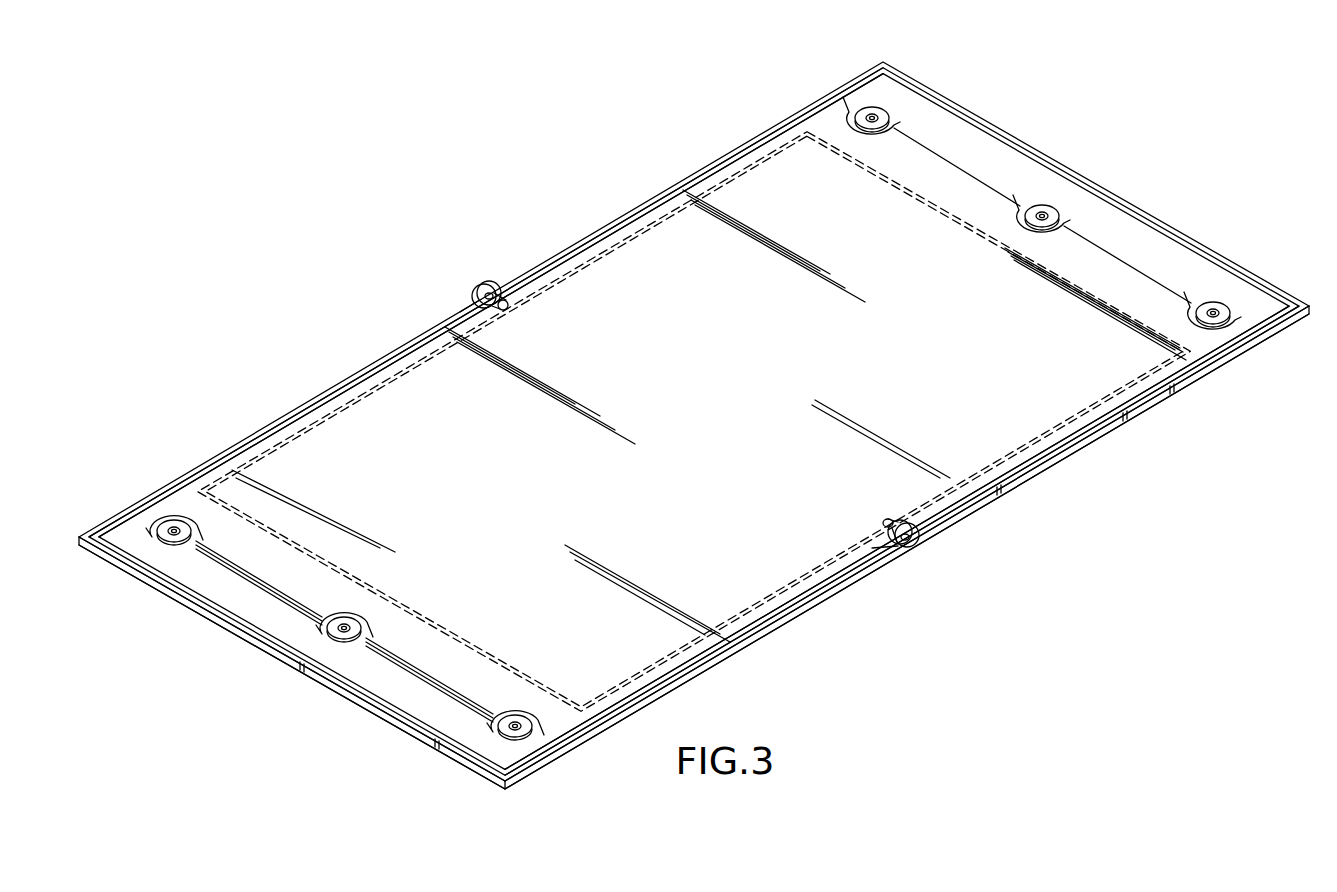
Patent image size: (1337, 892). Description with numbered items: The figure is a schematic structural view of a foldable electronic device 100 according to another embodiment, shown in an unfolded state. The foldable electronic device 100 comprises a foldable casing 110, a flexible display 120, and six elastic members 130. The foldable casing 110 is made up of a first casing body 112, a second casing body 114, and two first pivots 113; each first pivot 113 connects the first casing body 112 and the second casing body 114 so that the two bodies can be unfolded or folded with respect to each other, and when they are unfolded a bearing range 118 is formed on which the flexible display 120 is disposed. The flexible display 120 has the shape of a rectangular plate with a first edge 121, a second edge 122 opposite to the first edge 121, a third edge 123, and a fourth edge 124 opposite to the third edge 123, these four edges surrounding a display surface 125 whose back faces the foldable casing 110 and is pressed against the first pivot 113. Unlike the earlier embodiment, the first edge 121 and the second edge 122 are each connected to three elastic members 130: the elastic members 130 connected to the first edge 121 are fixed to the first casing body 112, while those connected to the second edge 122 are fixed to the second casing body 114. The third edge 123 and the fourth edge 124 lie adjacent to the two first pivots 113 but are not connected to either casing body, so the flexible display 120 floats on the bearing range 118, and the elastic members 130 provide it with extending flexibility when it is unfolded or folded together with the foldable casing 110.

The foldable electronic device 100 is at (1122, 677).
The foldable casing 110 is at (1178, 466).
The first casing body 112 is at (1105, 430).
The first pivot 113 is at (485, 282).
The second casing body 114 is at (760, 635).
The bearing range 118 is at (955, 130).
The flexible display 120 is at (440, 367).
The first edge 121 is at (1168, 278).
The second edge 122 is at (443, 690).
The third edge 123 is at (1178, 382).
The fourth edge 124 is at (750, 145).
The display surface 125 is at (953, 232).
The elastic member 130 is at (884, 110).